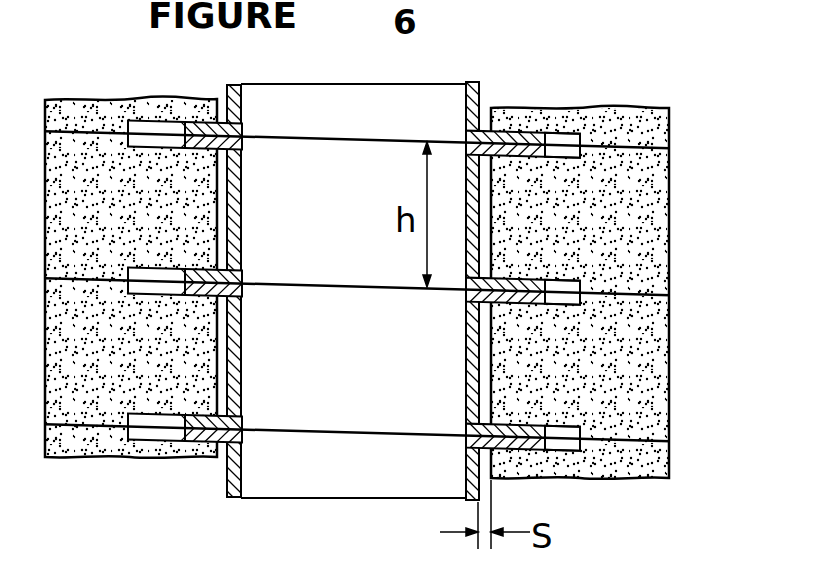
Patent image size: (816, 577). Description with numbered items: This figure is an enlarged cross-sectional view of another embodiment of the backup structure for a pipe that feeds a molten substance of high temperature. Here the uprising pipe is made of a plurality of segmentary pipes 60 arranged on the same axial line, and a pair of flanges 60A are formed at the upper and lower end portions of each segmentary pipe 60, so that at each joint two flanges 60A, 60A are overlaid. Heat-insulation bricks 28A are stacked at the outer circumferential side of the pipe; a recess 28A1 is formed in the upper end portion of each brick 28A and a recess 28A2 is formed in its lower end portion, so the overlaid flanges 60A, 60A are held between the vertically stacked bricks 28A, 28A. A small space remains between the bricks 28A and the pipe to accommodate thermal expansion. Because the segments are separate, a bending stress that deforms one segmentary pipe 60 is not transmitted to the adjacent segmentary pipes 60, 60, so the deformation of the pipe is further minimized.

The brick 28A is at (672, 140).
The recess 28A1 is at (583, 158).
The recess 28A2 is at (556, 140).
The segmentary pipe 60 is at (241, 217).
The flange 60A is at (186, 412).